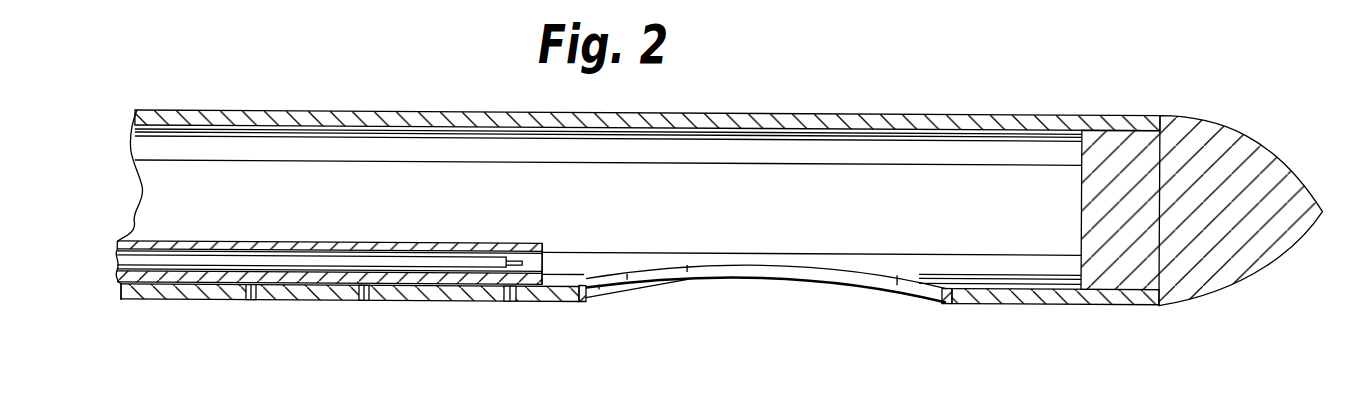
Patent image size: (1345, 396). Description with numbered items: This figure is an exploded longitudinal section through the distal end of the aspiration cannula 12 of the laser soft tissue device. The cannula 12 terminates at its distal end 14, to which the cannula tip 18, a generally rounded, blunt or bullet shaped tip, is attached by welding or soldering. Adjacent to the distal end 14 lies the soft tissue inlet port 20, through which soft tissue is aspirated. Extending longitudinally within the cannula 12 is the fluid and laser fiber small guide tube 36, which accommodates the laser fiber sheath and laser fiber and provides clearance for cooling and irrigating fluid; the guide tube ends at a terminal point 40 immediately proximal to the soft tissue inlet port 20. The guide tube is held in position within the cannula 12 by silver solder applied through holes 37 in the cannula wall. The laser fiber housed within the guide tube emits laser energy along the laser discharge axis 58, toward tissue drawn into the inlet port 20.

The aspiration cannula 12 is at (392, 110).
The distal end 14 is at (1083, 115).
The cannula tip 18 is at (1247, 130).
The soft tissue inlet port 20 is at (797, 277).
The fluid and laser fiber small guide tube 36 is at (493, 242).
The holes 37 is at (367, 300).
The terminal point of the fluid and laser fiber guide tube 40 is at (523, 261).
The laser discharge axis 58 is at (545, 266).